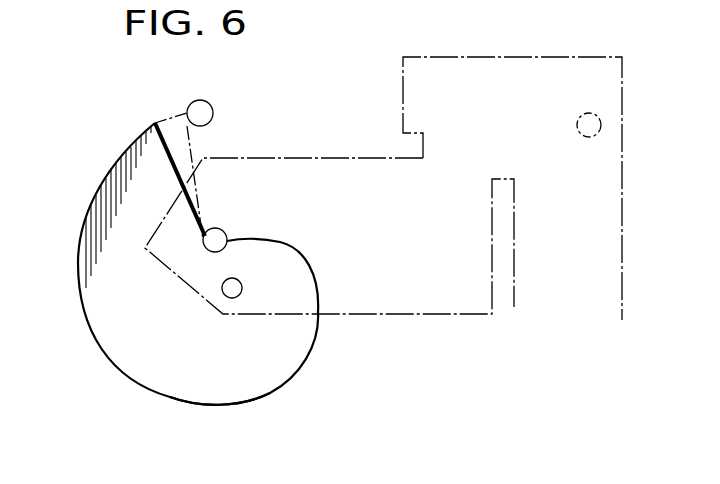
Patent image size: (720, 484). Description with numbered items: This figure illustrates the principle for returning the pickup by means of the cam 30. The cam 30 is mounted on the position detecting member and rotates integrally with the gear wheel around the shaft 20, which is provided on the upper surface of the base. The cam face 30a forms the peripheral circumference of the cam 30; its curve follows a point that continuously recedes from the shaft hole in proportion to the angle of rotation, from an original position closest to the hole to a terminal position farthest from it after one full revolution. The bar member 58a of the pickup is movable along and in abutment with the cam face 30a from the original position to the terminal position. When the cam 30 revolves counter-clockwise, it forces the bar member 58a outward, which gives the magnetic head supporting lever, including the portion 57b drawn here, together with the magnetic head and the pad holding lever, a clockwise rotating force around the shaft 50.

The cam 30 is at (132, 371).
The cam face 30a is at (230, 406).
The bar member 58a is at (212, 104).
The arm 57b is at (432, 308).
The shaft 50 is at (591, 114).
The shaft 20 is at (242, 288).